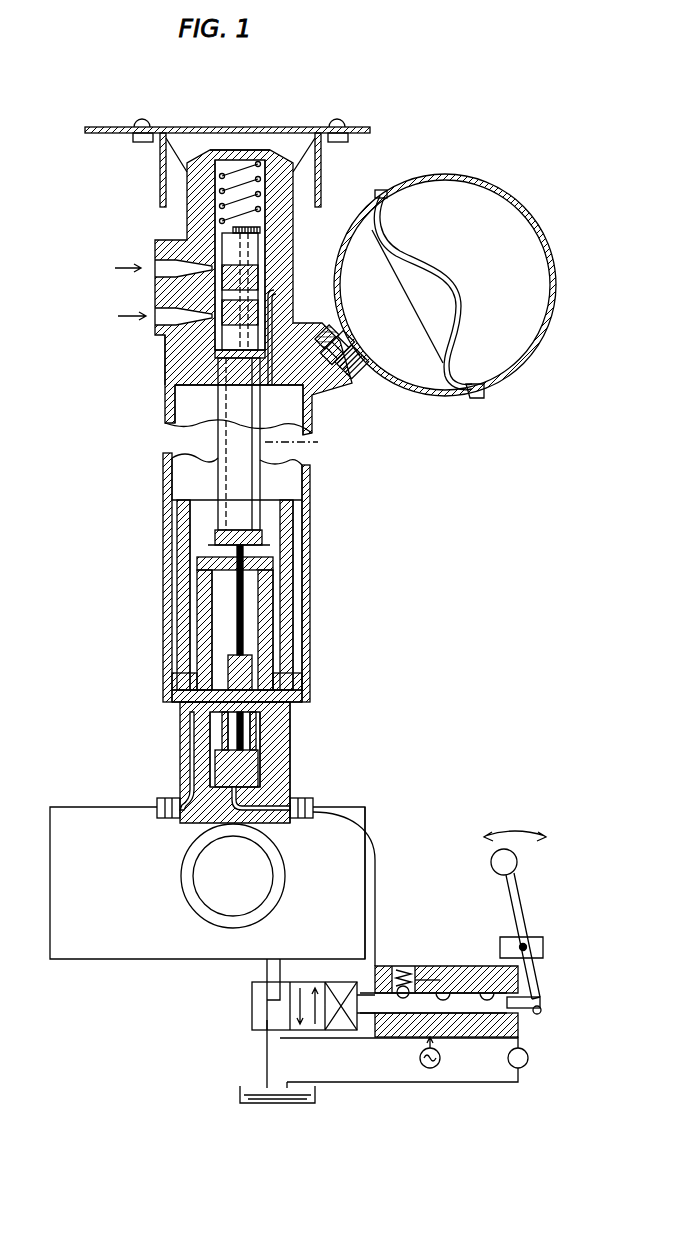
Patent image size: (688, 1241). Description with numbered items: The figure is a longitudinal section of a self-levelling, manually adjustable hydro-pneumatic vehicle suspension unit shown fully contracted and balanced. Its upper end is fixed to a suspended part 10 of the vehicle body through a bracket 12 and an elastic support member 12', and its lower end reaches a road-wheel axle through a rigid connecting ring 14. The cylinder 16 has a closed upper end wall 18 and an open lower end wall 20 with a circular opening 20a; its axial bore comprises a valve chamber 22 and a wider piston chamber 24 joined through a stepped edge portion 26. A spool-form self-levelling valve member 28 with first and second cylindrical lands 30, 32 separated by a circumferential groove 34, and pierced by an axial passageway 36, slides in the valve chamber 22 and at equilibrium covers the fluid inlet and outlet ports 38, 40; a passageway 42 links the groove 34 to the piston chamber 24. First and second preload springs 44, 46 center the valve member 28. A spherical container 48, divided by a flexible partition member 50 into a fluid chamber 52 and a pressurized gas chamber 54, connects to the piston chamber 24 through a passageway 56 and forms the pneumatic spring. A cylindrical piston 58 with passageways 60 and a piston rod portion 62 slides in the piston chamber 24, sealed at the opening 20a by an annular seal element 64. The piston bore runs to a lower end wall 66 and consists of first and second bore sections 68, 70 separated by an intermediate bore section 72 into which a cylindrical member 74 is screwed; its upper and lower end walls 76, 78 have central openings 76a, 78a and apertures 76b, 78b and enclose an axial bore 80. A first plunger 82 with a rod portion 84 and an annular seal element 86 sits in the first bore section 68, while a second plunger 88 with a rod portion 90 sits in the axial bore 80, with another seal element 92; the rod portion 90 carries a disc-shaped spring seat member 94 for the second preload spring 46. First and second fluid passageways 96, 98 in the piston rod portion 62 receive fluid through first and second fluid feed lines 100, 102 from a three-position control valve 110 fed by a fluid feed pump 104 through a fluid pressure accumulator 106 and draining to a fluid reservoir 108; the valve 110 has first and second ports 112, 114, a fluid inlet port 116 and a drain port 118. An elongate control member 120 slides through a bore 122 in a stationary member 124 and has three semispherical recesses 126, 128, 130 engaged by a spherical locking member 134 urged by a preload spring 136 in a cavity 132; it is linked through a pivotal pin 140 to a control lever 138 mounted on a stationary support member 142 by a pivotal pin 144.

The suspended part 10 is at (291, 127).
The bracket 12 is at (136, 170).
The elastic support member 12' is at (239, 124).
The rigid connecting ring 14 is at (285, 886).
The cylinder 16 is at (165, 405).
The closed upper end wall 18 is at (240, 150).
The open lower end wall 20 is at (292, 707).
The circular opening 20a is at (182, 665).
The valve chamber 22 is at (256, 365).
The piston chamber 24 is at (170, 470).
The radially outwardly stepped edge portion 26 is at (230, 372).
The self-levelling valve member 28 is at (212, 290).
The first cylindrical land 30 is at (268, 262).
The second cylindrical land 32 is at (182, 340).
The circumferential groove 34 is at (256, 302).
The axial passageway 36 is at (256, 277).
The fluid inlet port 38 is at (157, 262).
The fluid outlet port 40 is at (165, 314).
The passageway 42 is at (272, 318).
The first preload spring 44 is at (262, 194).
The second preload spring 46 is at (306, 439).
The spherical container 48 is at (465, 175).
The flexible partition member 50 is at (446, 366).
The fluid chamber 52 is at (364, 330).
The gas chamber 54 is at (478, 274).
The passageway 56 is at (333, 378).
The cylindrical piston 58 is at (300, 505).
The passageways 60 is at (170, 528).
The piston rod portion 62 is at (296, 642).
The annular seal element 64 is at (180, 692).
The lower end wall 66 is at (200, 826).
The first bore section 68 is at (270, 760).
The second bore section 70 is at (270, 530).
The intermediate bore section 72 is at (205, 714).
The cylindrical member 74 is at (283, 592).
The upper end wall 76 is at (200, 560).
The central opening 76a is at (206, 615).
The apertures 76b is at (197, 595).
The lower end wall 78 is at (250, 735).
The central opening 78a is at (222, 748).
The apertures 78b is at (215, 736).
The axial bore 80 is at (262, 616).
The first plunger 82 is at (286, 786).
The rod portion 84 is at (258, 772).
The annular seal element 86 is at (300, 795).
The second plunger 88 is at (254, 670).
The rod portion 90 is at (244, 610).
The seal 92 is at (300, 690).
The disc-shaped spring seat member 94 is at (208, 545).
The first fluid passageway 96 is at (275, 823).
The second fluid passageway 98 is at (170, 812).
The first fluid feed line 100 is at (376, 852).
The second fluid feed line 102 is at (160, 959).
The fluid feed pump 104 is at (524, 1066).
The fluid pressure accumulator 106 is at (420, 1058).
The fluid reservoir 108 is at (315, 1098).
The three-position control valve 110 is at (252, 1010).
The first port 112 is at (282, 980).
The second port 114 is at (262, 985).
The fluid inlet port 116 is at (282, 1040).
The drain port 118 is at (265, 1032).
The elongate control member 120 is at (518, 1036).
The bore 122 is at (505, 975).
The stationary member 124 is at (368, 930).
The first semispherical recess 126 is at (420, 988).
The second semispherical recess 128 is at (442, 966).
The third semispherical recess 130 is at (518, 945).
The cavity 132 is at (446, 1023).
The spherical locking member 134 is at (405, 966).
The preload spring 136 is at (394, 966).
The control lever 138 is at (526, 905).
The pivotal pin 140 is at (542, 1010).
The stationary support member 142 is at (545, 944).
The pivotal pin 144 is at (535, 975).